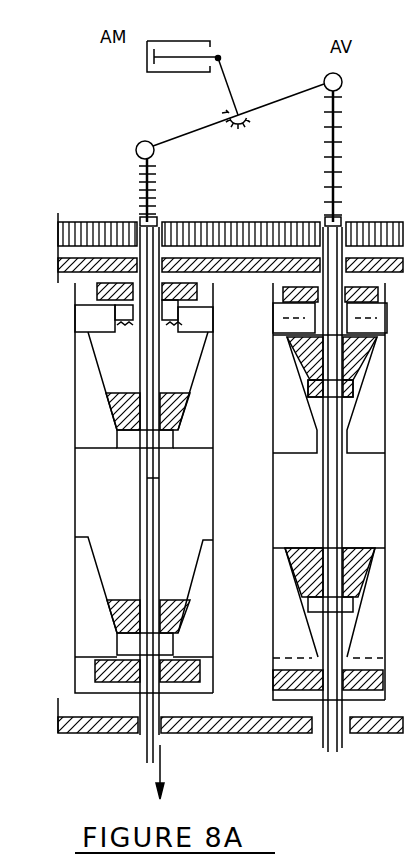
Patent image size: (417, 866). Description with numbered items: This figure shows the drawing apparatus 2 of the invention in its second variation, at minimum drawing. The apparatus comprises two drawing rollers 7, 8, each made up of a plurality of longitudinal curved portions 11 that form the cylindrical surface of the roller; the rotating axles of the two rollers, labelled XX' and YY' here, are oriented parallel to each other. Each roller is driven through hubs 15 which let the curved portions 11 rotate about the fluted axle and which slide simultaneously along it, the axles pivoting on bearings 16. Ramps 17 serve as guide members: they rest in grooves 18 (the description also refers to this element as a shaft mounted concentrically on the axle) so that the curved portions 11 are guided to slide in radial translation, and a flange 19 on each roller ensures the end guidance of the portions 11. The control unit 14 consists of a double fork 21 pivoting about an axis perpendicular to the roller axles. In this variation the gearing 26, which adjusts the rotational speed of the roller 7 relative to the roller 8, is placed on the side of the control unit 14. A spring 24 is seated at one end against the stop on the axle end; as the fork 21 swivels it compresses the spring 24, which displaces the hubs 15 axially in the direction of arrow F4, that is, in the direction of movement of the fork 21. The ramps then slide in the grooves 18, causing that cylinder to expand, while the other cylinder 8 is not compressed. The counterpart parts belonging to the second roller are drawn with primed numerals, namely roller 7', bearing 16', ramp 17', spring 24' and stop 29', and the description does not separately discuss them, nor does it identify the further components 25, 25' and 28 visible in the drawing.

The control unit 14 is at (240, 50).
The double fork 21 is at (299, 93).
The spring 24 is at (119, 181).
The articulation pivot with spring rod 24' is at (356, 147).
The drawing apparatus 2 is at (122, 222).
The gearing 26 is at (192, 222).
The rod seat 29' is at (270, 197).
The drawing roller 7 is at (117, 488).
The second housing 7' is at (345, 491).
The longitudinal curved portions 11 is at (213, 505).
The grooves 18 is at (214, 299).
The flange 19 is at (214, 322).
The upper seat block 25' is at (104, 338).
The ramps 17 is at (144, 507).
The hubs 15 is at (127, 597).
The lower seat block 25 is at (109, 716).
The shaft 28 is at (140, 510).
The bearings 16 is at (177, 753).
The second shaft end 16' is at (359, 755).
The drawing roller 8 is at (387, 427).
The second conical seat 17' is at (345, 619).
The section line XX' is at (175, 473).
The section line YY' is at (350, 487).
The arrow F4 is at (140, 773).